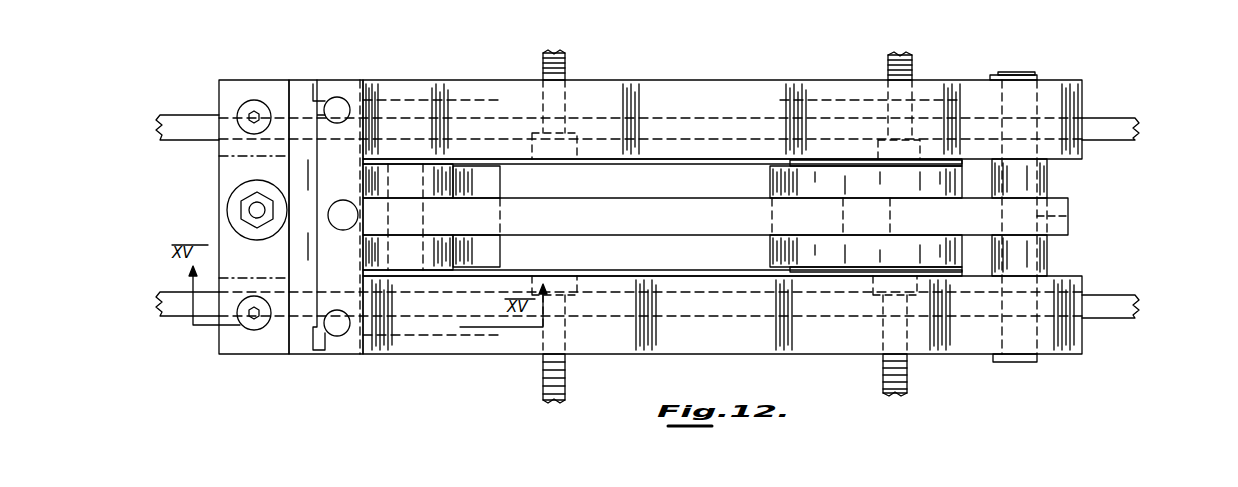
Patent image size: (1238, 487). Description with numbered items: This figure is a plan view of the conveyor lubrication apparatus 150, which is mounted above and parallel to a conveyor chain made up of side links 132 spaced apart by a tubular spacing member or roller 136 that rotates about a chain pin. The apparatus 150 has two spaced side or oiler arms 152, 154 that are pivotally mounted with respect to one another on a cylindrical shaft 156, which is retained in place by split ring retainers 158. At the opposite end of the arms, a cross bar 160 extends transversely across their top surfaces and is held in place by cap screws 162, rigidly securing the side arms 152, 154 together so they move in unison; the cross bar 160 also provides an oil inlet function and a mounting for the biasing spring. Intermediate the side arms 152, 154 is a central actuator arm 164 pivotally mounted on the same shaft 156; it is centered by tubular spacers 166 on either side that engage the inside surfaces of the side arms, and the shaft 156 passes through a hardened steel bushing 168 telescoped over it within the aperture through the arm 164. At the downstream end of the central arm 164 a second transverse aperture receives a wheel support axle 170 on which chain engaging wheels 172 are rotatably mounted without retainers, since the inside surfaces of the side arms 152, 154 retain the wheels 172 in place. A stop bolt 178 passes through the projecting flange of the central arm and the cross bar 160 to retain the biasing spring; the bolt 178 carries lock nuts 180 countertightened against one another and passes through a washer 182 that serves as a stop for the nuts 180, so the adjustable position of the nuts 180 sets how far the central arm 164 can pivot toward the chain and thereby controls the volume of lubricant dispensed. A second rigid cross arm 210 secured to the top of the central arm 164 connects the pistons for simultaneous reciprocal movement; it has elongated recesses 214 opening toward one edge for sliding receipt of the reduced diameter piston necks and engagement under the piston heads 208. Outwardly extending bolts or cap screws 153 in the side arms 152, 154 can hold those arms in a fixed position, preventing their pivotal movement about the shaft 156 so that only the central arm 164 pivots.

The side links 132 is at (165, 120).
The tubular spacing member and/or roller 136 is at (490, 183).
The conveyor lubrication apparatus 150 is at (935, 50).
The side or oiler arm 152 is at (779, 350).
The bolts or cap screws 153 is at (566, 60).
The side or oiler arm 154 is at (783, 55).
The cylindrical shaft 156 is at (1020, 73).
The split ring retainers 158 is at (1040, 80).
The cross bar 160 is at (272, 60).
The cap screws 162 is at (248, 112).
The central actuator arm 164 is at (677, 229).
The tubular spacers 166 is at (1050, 178).
The hardened steel bushing 168 is at (1068, 216).
The wheel support axle 170 is at (390, 163).
The chain engaging wheels 172 is at (412, 177).
The stop bolt 178 is at (255, 212).
The lock nuts 180 is at (242, 188).
The washer 182 is at (235, 208).
The heads 208 is at (337, 108).
The second rigid cross arm 210 is at (347, 191).
The elongated recesses 214 is at (318, 100).